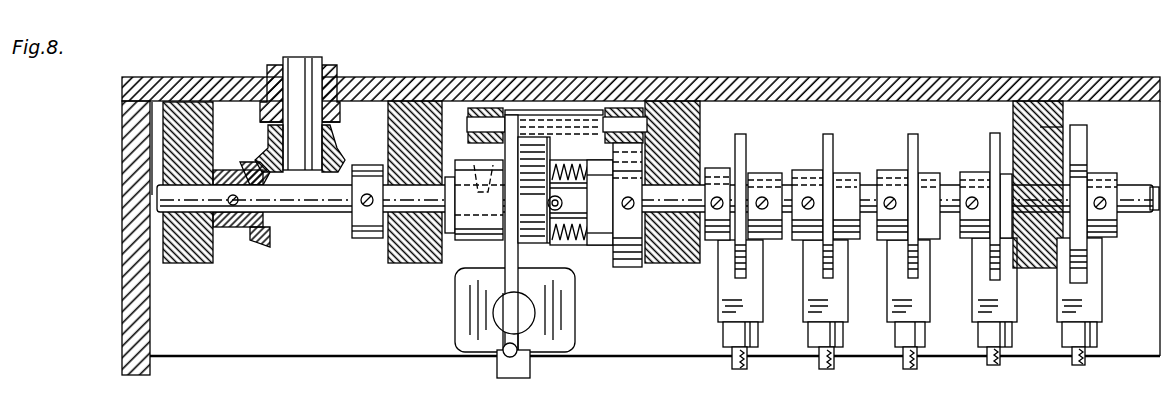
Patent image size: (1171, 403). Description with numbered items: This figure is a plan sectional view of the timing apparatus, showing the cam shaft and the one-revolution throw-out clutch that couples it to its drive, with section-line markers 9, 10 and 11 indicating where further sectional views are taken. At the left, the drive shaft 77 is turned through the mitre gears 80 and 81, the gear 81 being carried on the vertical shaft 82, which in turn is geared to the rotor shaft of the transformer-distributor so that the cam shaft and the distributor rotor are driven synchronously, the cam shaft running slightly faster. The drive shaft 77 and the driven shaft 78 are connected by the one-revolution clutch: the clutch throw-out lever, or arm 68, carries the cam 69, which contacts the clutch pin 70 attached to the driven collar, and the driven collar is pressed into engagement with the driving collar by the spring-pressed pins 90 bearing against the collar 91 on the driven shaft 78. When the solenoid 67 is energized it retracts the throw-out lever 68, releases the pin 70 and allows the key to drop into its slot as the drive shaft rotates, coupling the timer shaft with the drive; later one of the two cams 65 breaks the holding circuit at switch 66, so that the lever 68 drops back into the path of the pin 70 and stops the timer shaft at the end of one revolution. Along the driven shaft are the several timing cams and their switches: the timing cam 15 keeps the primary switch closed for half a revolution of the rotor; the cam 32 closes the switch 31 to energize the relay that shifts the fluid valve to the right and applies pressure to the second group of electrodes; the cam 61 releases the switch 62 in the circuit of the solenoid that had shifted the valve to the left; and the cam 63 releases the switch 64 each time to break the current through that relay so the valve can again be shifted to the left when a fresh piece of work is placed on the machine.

The timing cam 15 is at (1063, 270).
The switch 31 is at (813, 302).
The cam 32 is at (830, 153).
The cam 61 is at (747, 156).
The switch 62 is at (733, 303).
The cam 63 is at (900, 302).
The switch 64 is at (915, 149).
The cams 65 is at (988, 285).
The switch 66 is at (983, 262).
The solenoid 67 is at (495, 312).
The clutch throw-out lever 68 is at (508, 147).
The cam 69 is at (543, 233).
The clutch pin 70 is at (558, 196).
The drive shaft 77 is at (320, 203).
The driven shaft 78 is at (685, 200).
The mitre gear 80 is at (258, 243).
The mitre gear 81 is at (333, 167).
The shaft 82 is at (298, 64).
The spring-pressed pins 90 is at (603, 170).
The collar 91 is at (638, 267).
The section line 9- 9 is at (509, 402).
The section line 10- 10 is at (732, 240).
The section line 11- 11 is at (1097, 214).